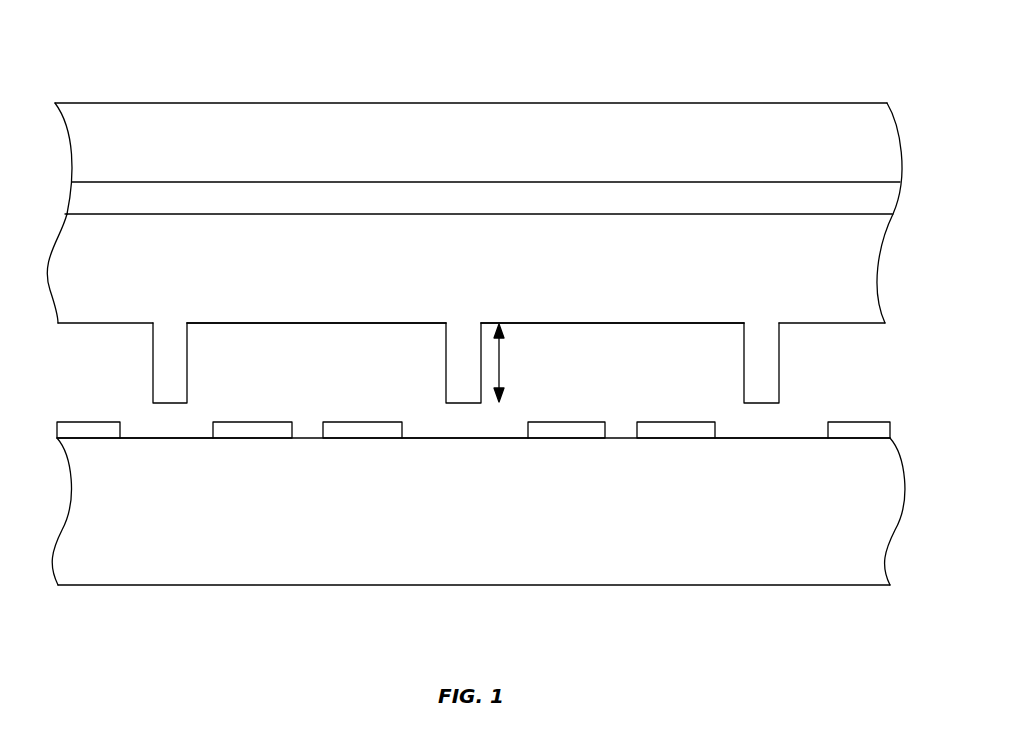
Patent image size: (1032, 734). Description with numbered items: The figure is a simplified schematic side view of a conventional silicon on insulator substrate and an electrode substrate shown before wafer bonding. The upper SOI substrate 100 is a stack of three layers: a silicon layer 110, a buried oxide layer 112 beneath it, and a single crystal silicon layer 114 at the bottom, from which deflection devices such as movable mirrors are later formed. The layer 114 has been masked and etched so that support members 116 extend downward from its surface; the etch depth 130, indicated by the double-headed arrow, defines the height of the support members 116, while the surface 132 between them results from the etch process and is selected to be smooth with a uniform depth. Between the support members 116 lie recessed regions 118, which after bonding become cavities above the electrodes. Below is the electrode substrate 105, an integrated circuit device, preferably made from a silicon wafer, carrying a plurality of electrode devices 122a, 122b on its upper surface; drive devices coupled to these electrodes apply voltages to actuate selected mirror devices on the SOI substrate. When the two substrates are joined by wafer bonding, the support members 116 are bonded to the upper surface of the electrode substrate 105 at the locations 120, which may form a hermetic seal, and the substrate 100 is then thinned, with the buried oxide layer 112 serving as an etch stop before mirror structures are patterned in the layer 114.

The SOI substrate 100 is at (780, 83).
The electrode substrate 105 is at (840, 564).
The silicon layer 110 is at (830, 162).
The buried oxide layer 112 is at (830, 211).
The single crystal silicon layer 114 is at (830, 286).
The support members 116 is at (763, 370).
The recessed regions 118 is at (330, 369).
The bonding locations 120 is at (167, 448).
The electrode device 122a is at (252, 432).
The electrode device 122b is at (361, 432).
The etch depth 130 is at (525, 363).
The etched surface 132 is at (608, 323).